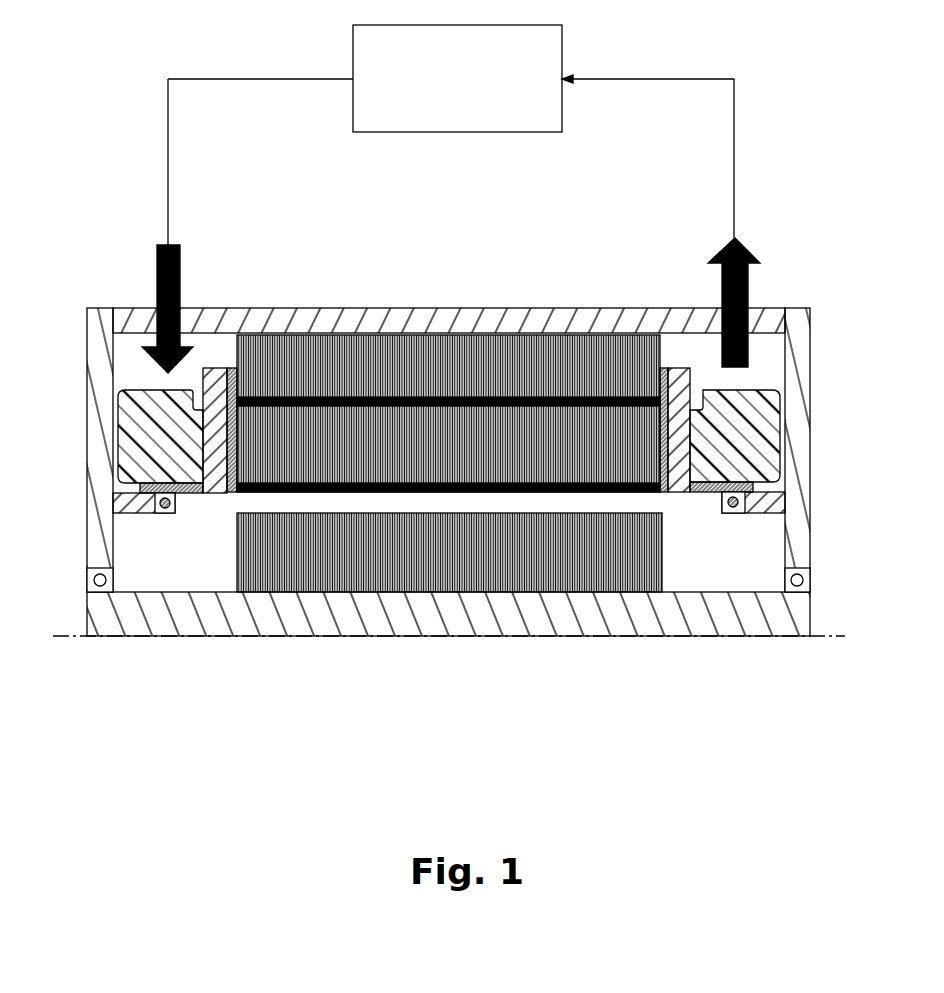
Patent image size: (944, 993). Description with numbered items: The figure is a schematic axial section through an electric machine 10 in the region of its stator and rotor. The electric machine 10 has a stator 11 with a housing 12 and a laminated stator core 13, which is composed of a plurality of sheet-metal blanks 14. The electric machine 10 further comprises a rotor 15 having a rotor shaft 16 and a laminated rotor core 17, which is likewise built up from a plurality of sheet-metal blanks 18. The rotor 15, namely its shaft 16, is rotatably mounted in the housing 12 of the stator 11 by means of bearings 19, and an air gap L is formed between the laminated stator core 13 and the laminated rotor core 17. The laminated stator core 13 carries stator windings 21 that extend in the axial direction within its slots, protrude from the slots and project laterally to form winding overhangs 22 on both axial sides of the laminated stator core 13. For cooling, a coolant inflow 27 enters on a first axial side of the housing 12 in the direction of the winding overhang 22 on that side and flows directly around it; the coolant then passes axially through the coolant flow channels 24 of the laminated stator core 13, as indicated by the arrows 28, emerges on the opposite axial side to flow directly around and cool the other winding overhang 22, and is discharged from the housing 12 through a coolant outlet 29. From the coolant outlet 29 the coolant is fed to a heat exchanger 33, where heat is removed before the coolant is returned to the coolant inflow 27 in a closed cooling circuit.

The electric machine 10 is at (449, 422).
The stator 11 is at (449, 476).
The housing 12 is at (642, 328).
The laminated stator core 13 is at (445, 375).
The sheet-metal blanks 14 is at (445, 375).
The rotor 15 is at (448, 666).
The rotor shaft 16 is at (553, 636).
The laminated rotor core 17 is at (480, 607).
The sheet-metal blanks 18 is at (627, 567).
The bearings 19 is at (87, 580).
The stator windings 21 is at (200, 447).
The winding overhangs 22 is at (140, 440).
The coolant flow channels 24 is at (405, 398).
The coolant inflow 27 is at (168, 287).
The arrows 28 is at (448, 375).
The coolant outlet 29 is at (737, 290).
The heat exchanger 33 is at (472, 94).
The air gap L is at (430, 503).